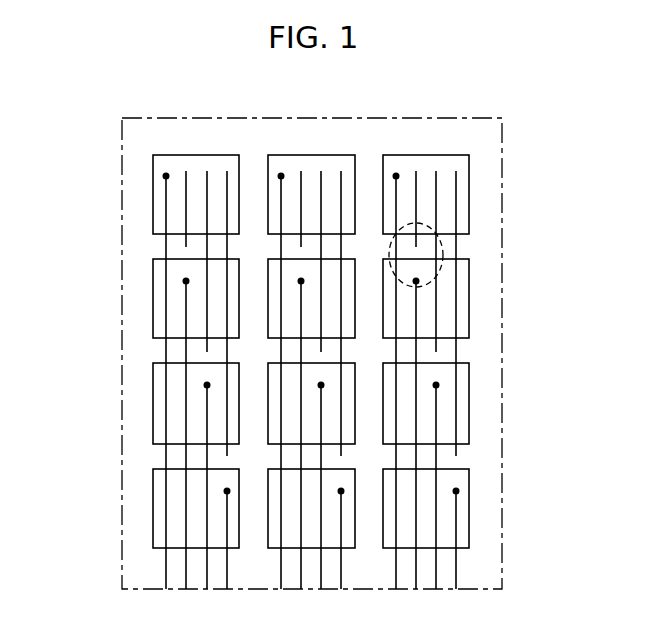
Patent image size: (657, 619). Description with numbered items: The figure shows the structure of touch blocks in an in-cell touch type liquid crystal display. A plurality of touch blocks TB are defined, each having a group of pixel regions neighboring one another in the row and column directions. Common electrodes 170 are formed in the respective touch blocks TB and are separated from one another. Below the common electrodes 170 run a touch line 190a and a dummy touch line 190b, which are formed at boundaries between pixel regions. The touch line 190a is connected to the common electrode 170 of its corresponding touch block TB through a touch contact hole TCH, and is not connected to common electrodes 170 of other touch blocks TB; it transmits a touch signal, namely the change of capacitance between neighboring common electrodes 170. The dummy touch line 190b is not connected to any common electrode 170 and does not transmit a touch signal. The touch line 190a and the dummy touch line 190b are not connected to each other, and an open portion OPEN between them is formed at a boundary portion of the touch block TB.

The common electrode 170 is at (178, 163).
The dummy touch line 190b is at (186, 207).
The touch contact hole TCH is at (186, 281).
The touch line 190a is at (187, 352).
The touch block TB is at (478, 192).
The open portion OPEN is at (443, 245).